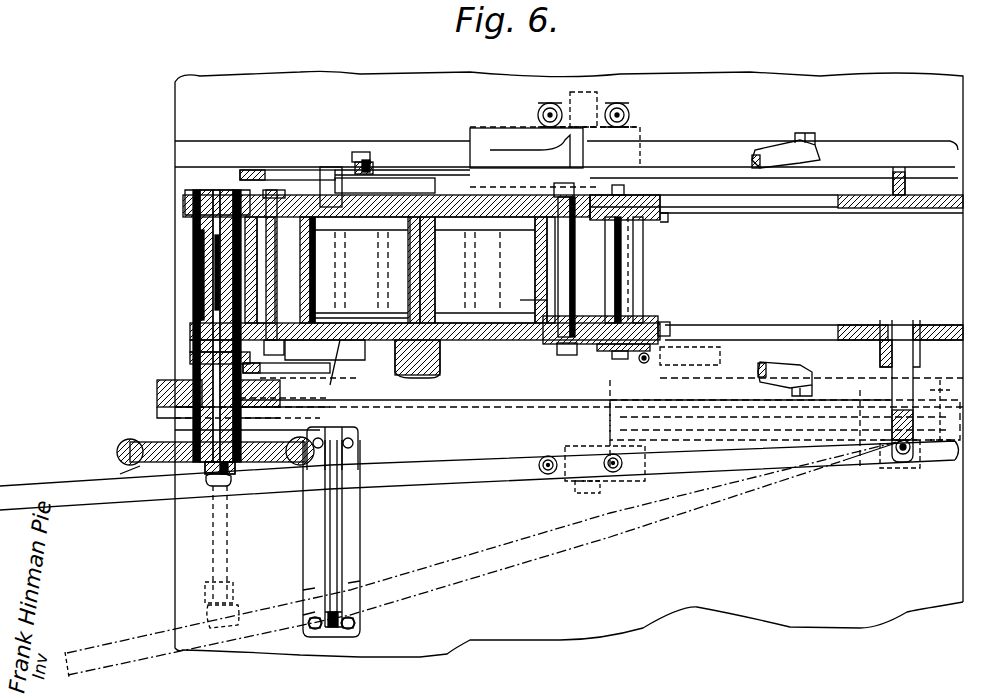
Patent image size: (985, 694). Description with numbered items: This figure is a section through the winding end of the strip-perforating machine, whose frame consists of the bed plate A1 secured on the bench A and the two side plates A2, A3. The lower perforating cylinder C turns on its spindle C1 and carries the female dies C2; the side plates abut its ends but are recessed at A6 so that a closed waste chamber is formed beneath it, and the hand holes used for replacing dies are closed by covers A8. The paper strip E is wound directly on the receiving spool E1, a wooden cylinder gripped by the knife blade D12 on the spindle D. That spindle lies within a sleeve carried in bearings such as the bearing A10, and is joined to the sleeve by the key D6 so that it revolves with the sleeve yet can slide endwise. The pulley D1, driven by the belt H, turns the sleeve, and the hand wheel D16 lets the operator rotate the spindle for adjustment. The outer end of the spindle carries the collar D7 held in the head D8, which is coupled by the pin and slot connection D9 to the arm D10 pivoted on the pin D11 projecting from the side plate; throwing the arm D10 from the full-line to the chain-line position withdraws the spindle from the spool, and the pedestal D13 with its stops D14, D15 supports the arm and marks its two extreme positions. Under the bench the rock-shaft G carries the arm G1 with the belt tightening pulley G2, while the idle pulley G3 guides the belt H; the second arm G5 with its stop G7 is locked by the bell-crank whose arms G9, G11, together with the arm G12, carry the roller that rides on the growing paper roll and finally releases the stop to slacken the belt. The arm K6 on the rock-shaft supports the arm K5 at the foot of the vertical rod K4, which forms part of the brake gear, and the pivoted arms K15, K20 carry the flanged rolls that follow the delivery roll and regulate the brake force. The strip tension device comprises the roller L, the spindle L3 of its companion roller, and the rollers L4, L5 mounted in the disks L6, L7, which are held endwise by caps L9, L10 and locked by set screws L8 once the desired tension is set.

The bench A is at (569, 354).
The bed plate A1 is at (195, 322).
The side plate A2 is at (200, 370).
The side plate A3 is at (183, 221).
The recess A6 is at (378, 340).
The cover A8 is at (200, 334).
The bearing A10 is at (195, 420).
The lower cylinder C is at (508, 272).
The spindle C1 is at (410, 262).
The female die C2 is at (546, 312).
The spindle D is at (200, 266).
The pulley D1 is at (200, 416).
The key D6 is at (190, 380).
The collar D7 is at (210, 466).
The head D8 is at (232, 476).
The pin and slot connection D9 is at (213, 480).
The arm D10 is at (70, 490).
The pin D11 is at (900, 455).
The knife blade D12 is at (218, 300).
The pedestal D13 is at (355, 521).
The stop D14 is at (352, 456).
The stop D15 is at (352, 609).
The hand wheel D16 is at (128, 468).
The paper strip E is at (259, 270).
The spool E1 is at (205, 350).
The rock-shaft G is at (600, 486).
The arm G1 is at (745, 440).
The belt tightening pulley G2 is at (940, 445).
The idle pulley G3 is at (215, 438).
The second arm G5 is at (425, 175).
The stop G7 is at (376, 170).
The bell-crank arm G9 is at (400, 178).
The bell-crank arm G11 is at (302, 165).
The arm G12 is at (300, 372).
The belt H is at (492, 402).
The vertical rod K4 is at (644, 365).
The arm K5 is at (720, 355).
The arm K6 is at (705, 350).
The arm K15 is at (788, 370).
The arm K20 is at (770, 160).
The roller L is at (550, 255).
The spindle L3 is at (580, 195).
The roller L4 is at (622, 200).
The roller L5 is at (645, 288).
The disk L6 is at (600, 348).
The disk L7 is at (665, 218).
The set screw L8 is at (660, 330).
The cap L9 is at (650, 345).
The cap L10 is at (655, 196).